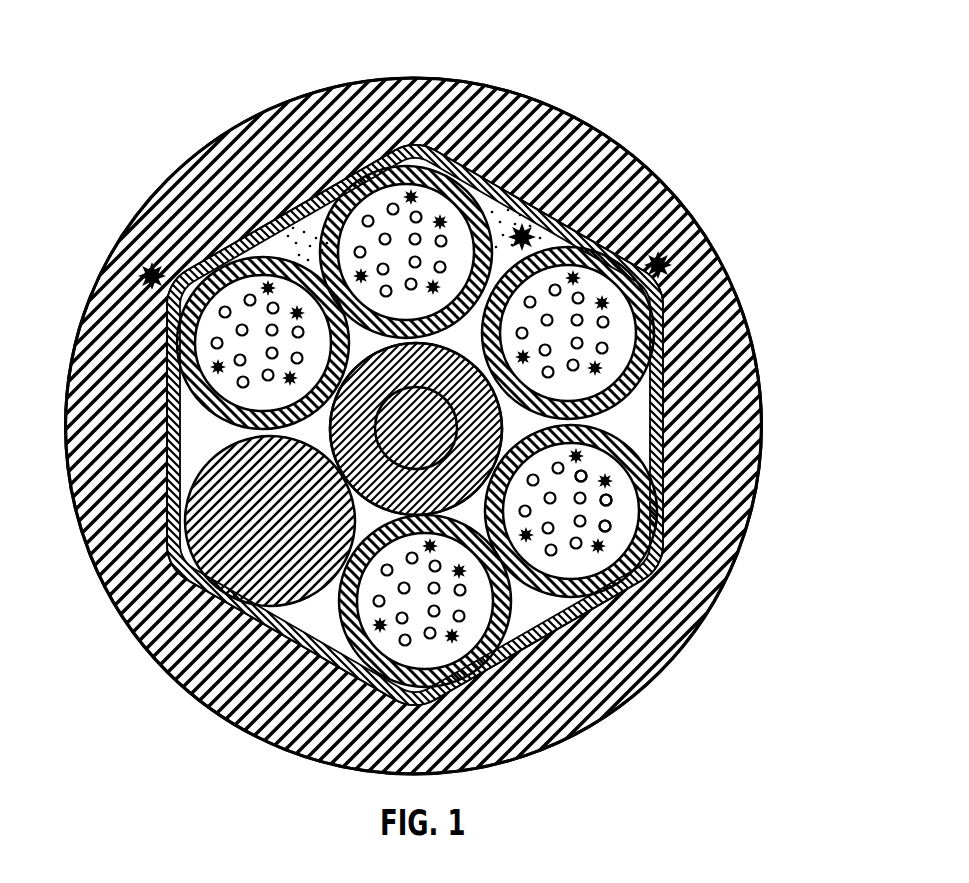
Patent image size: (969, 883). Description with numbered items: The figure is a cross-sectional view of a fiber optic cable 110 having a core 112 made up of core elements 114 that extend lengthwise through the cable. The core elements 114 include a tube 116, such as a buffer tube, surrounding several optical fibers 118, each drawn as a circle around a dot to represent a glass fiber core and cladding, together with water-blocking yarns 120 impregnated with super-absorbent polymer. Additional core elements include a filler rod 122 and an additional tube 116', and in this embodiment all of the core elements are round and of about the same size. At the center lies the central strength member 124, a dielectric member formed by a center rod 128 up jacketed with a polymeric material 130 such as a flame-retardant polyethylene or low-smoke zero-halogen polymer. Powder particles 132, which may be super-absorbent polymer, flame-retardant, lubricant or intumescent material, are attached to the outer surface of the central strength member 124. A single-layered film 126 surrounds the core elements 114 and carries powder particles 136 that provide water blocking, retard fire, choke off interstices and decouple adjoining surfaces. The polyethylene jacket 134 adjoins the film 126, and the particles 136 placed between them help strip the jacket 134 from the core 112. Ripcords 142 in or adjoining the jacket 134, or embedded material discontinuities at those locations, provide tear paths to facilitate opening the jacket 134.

The fiber optic cable 110 is at (731, 137).
The core 112 is at (293, 245).
The core elements 114 is at (170, 398).
The tube 116 is at (626, 517).
The additional tube 116' is at (498, 630).
The optical fiber 118 is at (587, 476).
The water-blocking yarn 120 is at (611, 527).
The filler rod 122 is at (235, 573).
The central strength member 124 is at (383, 458).
The film 126 is at (525, 176).
The center rod 128 is at (432, 402).
The polymeric material 130 is at (490, 405).
The powder particles 132 is at (270, 250).
The jacket 134 is at (110, 318).
The powder particles 136 is at (500, 215).
The ripcords 142 is at (553, 200).